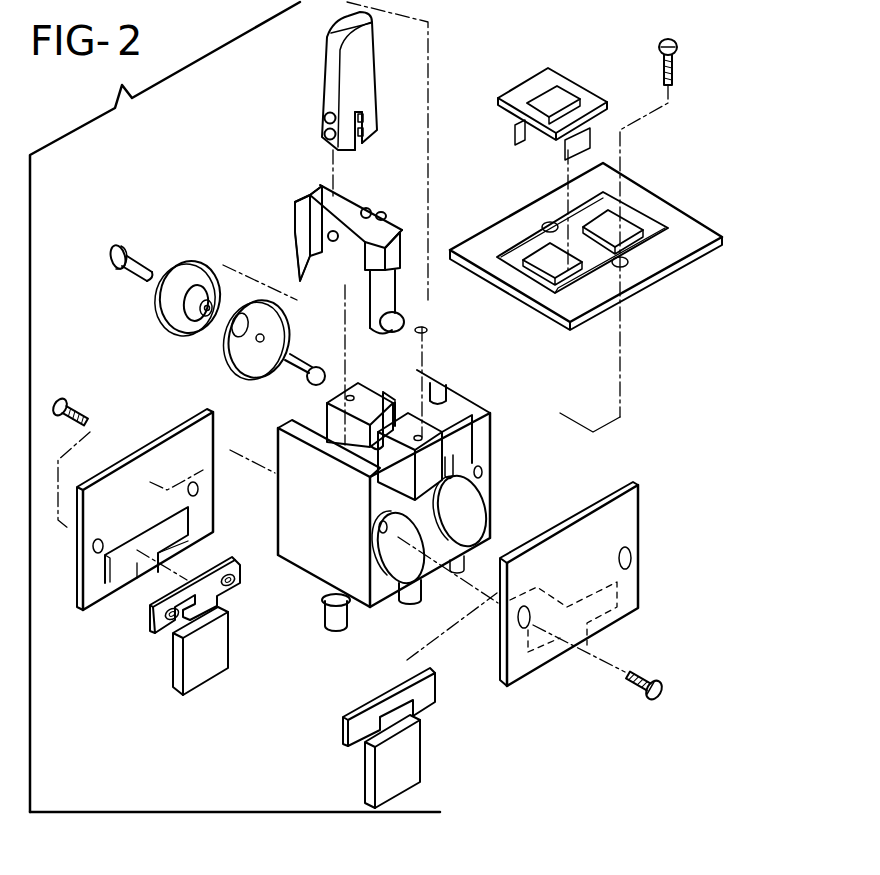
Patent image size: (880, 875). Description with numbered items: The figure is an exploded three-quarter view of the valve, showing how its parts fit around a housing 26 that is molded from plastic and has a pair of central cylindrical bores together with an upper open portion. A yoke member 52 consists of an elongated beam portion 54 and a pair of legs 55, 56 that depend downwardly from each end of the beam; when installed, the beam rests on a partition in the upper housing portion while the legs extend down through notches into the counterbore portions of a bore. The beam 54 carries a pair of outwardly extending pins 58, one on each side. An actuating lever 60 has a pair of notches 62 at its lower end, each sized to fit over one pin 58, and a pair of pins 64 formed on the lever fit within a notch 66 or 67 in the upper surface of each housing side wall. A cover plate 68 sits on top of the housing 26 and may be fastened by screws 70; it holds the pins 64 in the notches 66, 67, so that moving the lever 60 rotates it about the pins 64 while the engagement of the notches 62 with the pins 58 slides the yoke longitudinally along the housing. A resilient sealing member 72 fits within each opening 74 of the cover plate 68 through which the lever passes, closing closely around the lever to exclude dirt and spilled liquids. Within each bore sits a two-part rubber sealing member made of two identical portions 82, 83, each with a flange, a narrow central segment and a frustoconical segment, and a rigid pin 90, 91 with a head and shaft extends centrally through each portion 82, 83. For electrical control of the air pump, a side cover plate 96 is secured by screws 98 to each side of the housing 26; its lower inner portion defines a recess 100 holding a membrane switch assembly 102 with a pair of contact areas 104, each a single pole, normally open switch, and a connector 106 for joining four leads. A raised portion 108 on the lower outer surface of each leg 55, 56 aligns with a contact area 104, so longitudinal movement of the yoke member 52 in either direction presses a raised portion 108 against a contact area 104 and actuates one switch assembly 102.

The housing 26 is at (483, 481).
The yoke member 52 is at (403, 236).
The beam portion 54 is at (336, 228).
The leg 55 is at (296, 228).
The leg 56 is at (404, 320).
The pin 58 is at (386, 215).
The actuating lever 60 is at (326, 50).
The notch 62 is at (325, 140).
The pin 64 is at (375, 86).
The notch 66 is at (326, 412).
The notch 67 is at (378, 394).
The cover plate 68 is at (656, 200).
The screw 70 is at (675, 70).
The sealing member 72 is at (527, 90).
The opening 74 is at (543, 256).
The sealing member portion 82 is at (248, 343).
The sealing member portion 83 is at (172, 327).
The rigid pin 90 is at (303, 366).
The rigid pin 91 is at (111, 268).
The side cover plate 96 is at (161, 439).
The screw 98 is at (72, 400).
The recess 100 is at (191, 548).
The membrane switch assembly 102 is at (150, 632).
The contact area 104 is at (162, 616).
The connector 106 is at (206, 672).
The raised portion 108 is at (296, 262).